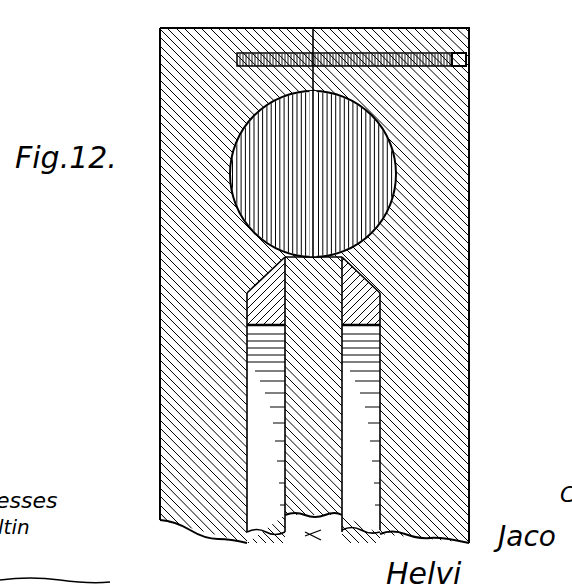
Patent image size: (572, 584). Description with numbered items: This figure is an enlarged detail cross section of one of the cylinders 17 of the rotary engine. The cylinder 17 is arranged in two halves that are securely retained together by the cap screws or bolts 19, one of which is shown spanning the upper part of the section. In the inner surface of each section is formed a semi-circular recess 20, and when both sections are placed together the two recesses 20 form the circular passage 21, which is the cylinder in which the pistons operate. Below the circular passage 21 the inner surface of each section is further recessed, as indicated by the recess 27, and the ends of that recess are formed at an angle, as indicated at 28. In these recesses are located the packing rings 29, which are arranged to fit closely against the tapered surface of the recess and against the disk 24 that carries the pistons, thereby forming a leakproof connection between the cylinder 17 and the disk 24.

The cylinder 17 is at (470, 365).
The cap screws or bolts 19 is at (470, 63).
The semi-circular recess 20 is at (232, 174).
The circular passage 21 is at (312, 174).
The disk 24 is at (320, 346).
The recess 27 is at (313, 517).
The angled ends of recess 28 is at (262, 276).
The packing rings 29 is at (245, 300).